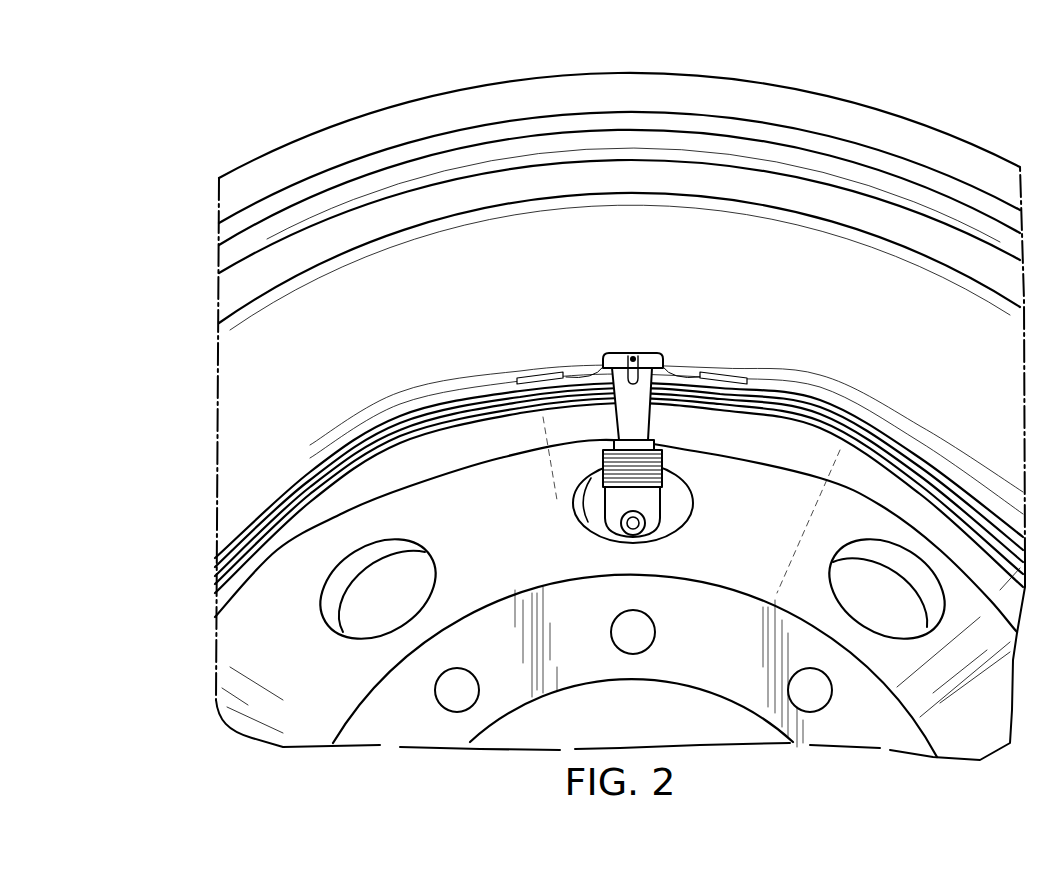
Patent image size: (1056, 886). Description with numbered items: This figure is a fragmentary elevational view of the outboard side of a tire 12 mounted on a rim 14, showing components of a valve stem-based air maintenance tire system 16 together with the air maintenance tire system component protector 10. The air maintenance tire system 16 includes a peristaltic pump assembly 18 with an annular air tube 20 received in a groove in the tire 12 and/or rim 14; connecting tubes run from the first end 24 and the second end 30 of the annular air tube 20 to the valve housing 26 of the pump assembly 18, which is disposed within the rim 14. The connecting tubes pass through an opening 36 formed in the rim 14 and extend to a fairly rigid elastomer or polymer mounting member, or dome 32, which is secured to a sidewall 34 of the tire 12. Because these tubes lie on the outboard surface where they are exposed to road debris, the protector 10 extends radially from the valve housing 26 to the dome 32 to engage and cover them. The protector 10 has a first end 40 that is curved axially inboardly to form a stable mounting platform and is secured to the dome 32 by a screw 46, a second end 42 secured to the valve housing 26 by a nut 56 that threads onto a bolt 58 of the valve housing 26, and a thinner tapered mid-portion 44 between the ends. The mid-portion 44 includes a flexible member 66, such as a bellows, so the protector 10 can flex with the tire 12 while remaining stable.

The air maintenance tire system component protector 10 is at (592, 414).
The tire 12 is at (882, 100).
The rim 14 is at (893, 475).
The air maintenance tire system 16 is at (699, 352).
The peristaltic pump assembly 18 is at (764, 372).
The annular air tube 20 is at (820, 400).
The first end of the annular air tube 24 is at (735, 385).
The valve housing 26 is at (668, 506).
The second end of the annular air tube 30 is at (527, 378).
The mounting member (dome) 32 is at (592, 366).
The sidewall 34 is at (248, 437).
The opening 36 is at (582, 522).
The first end of the protector 40 is at (614, 353).
The second end of the protector 42 is at (663, 518).
The mid-portion 44 is at (643, 438).
The screw 46 is at (634, 355).
The nut 56 is at (620, 515).
The bolt 58 is at (636, 530).
The flexible member (bellows) 66 is at (657, 459).